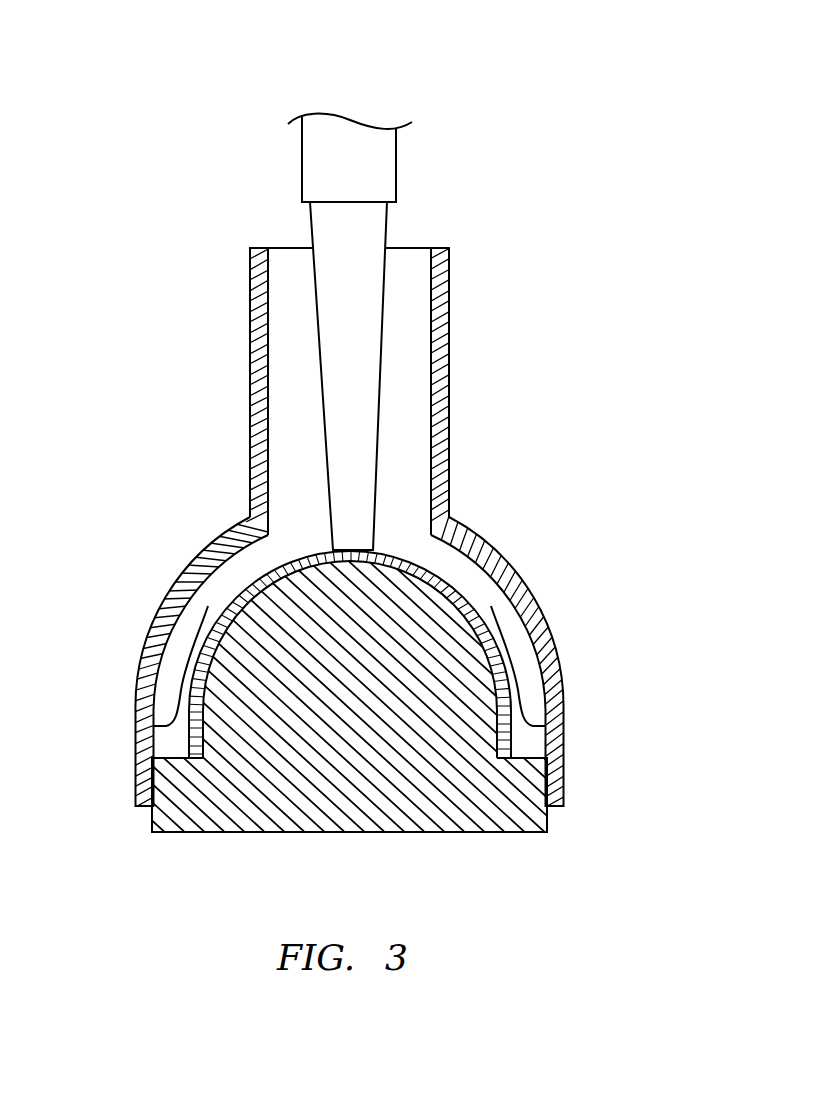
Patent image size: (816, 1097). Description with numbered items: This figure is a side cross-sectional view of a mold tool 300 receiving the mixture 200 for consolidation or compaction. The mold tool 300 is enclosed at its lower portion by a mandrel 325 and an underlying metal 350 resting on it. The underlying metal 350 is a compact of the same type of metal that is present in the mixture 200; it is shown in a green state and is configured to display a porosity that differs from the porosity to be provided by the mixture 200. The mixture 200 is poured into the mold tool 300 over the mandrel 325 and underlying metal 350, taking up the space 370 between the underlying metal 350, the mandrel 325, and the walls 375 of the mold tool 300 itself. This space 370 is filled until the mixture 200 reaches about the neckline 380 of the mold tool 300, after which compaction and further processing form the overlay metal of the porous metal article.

The mold tool 300 is at (655, 37).
The mixture 200 is at (373, 245).
The neckline 380 is at (236, 509).
The walls 375 is at (552, 642).
The space 370 is at (208, 592).
The underlying metal 350 is at (502, 740).
The mandrel 325 is at (522, 820).